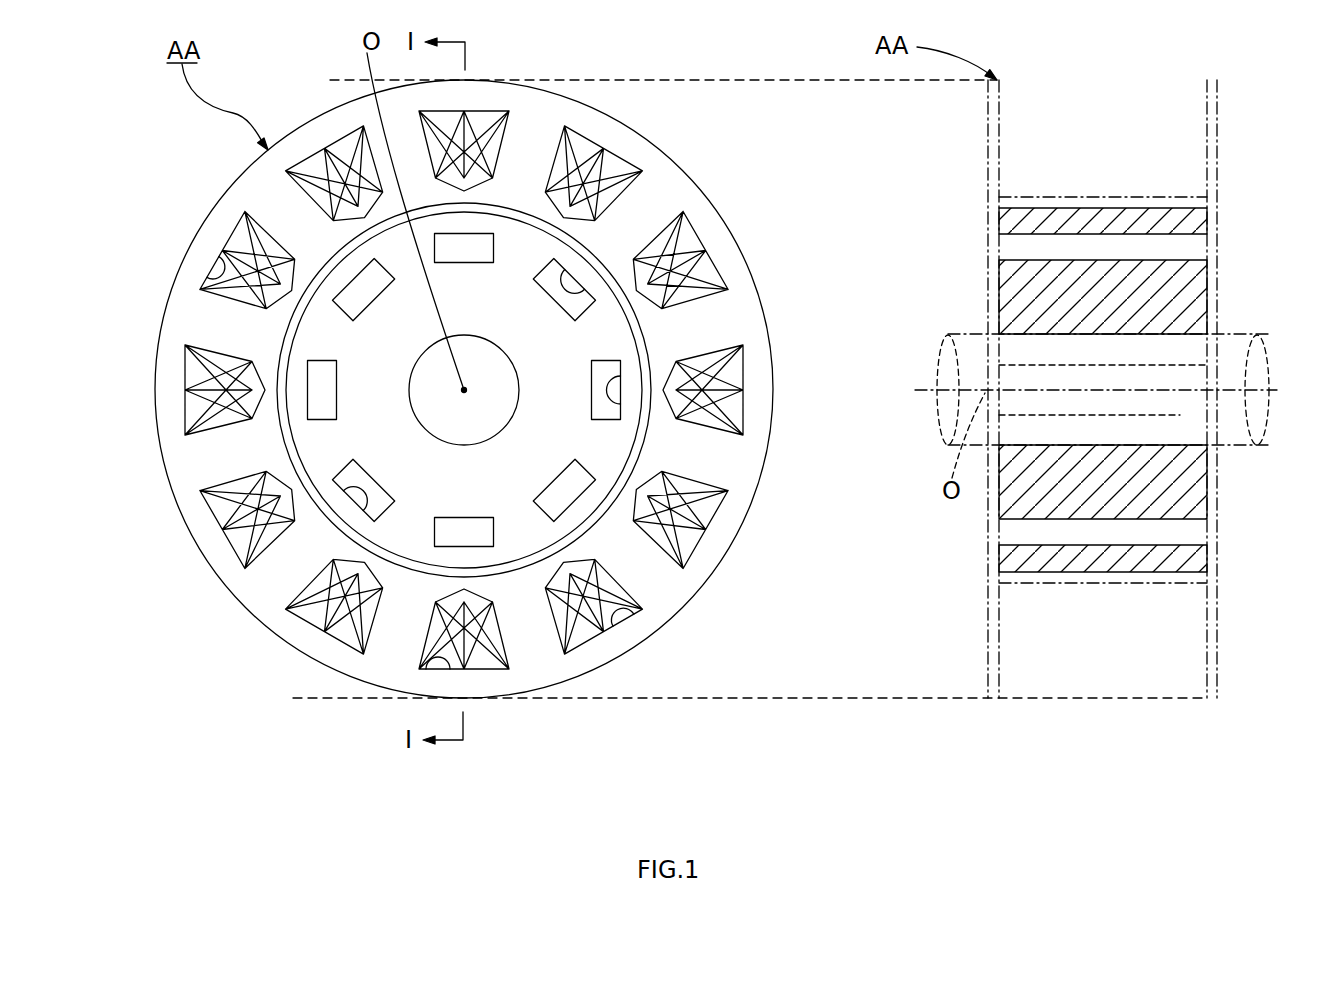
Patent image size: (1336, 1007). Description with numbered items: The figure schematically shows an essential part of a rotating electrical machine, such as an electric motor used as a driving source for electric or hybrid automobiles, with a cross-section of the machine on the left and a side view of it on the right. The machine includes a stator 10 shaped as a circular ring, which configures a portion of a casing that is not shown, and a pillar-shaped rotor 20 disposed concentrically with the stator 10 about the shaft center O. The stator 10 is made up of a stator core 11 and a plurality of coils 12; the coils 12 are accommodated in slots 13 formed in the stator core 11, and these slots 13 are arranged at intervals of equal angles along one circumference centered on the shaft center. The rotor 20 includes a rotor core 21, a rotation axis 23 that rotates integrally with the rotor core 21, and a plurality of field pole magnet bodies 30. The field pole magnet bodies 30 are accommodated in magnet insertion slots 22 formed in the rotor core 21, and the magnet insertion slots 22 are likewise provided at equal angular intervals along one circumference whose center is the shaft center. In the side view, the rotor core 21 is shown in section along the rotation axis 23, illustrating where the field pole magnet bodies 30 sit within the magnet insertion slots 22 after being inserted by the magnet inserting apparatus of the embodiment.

The stator 10 is at (672, 633).
The stator core 11 is at (317, 140).
The coils 12 is at (243, 233).
The slots 13 is at (222, 260).
The rotor 20 is at (282, 341).
The rotor core 21 is at (520, 240).
The magnet insertion slots 22 is at (565, 277).
The rotation axis 23 is at (458, 422).
The field pole magnet bodies 30 is at (577, 295).